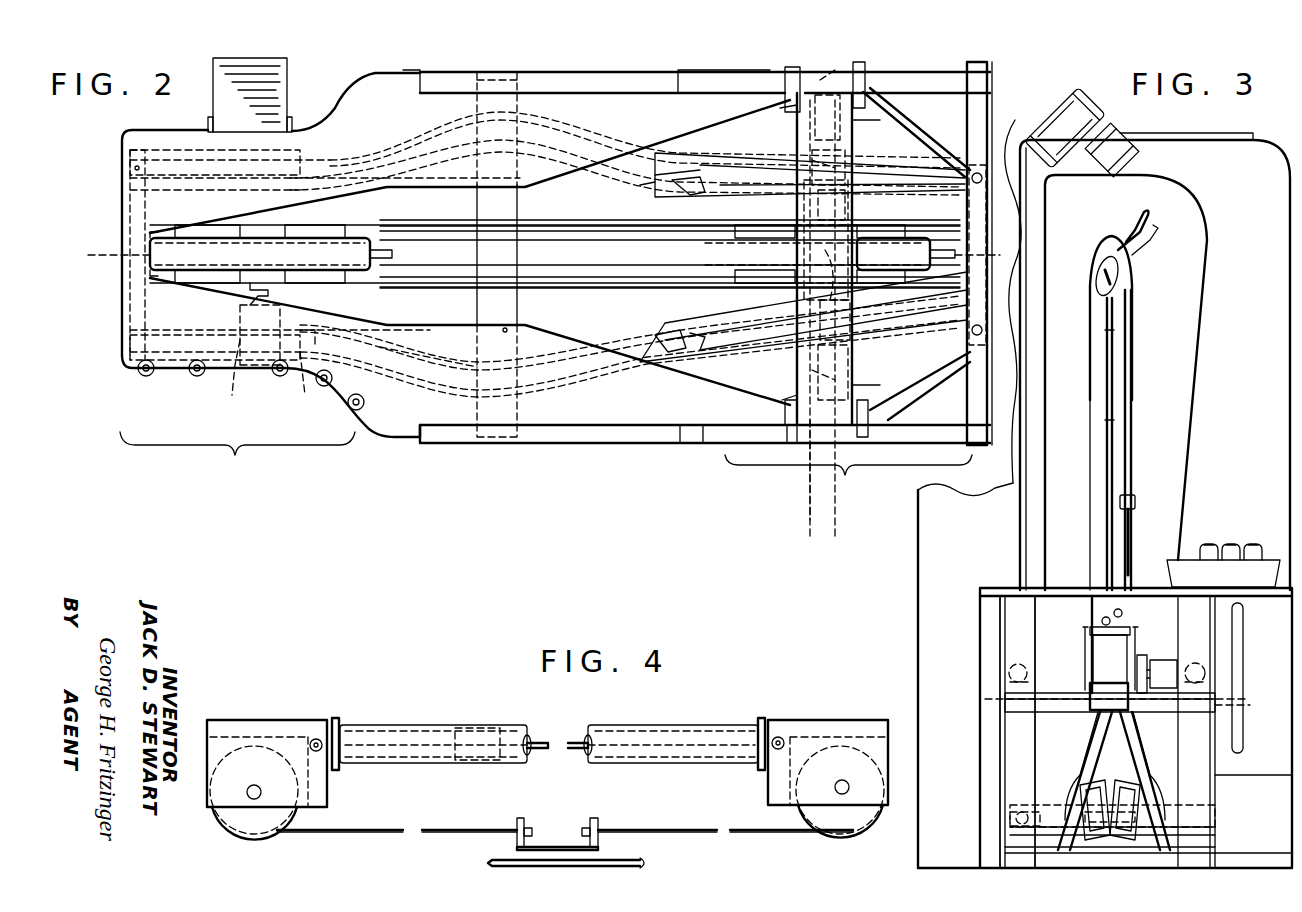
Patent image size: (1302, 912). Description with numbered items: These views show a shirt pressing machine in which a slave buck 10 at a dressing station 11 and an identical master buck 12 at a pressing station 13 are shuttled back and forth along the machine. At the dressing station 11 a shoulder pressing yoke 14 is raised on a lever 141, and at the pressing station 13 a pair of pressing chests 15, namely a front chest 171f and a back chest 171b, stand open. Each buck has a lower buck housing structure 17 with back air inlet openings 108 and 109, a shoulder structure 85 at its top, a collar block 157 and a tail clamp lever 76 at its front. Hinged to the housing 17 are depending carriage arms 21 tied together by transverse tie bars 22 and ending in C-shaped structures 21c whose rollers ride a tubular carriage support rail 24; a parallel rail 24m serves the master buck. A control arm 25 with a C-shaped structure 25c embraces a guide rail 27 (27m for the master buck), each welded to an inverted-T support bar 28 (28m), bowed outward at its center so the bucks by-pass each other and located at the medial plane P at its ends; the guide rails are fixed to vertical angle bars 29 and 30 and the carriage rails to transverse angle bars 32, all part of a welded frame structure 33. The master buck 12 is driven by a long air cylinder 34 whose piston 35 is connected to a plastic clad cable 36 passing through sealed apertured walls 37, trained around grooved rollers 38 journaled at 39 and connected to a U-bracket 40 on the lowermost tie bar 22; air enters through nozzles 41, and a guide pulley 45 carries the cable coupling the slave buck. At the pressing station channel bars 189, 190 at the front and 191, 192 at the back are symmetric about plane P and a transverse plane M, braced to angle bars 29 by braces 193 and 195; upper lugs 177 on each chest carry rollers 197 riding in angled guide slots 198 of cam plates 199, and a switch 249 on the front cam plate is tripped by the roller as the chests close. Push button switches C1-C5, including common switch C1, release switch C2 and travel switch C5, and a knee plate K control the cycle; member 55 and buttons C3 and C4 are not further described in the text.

In FIG. 2, the first buck 10 is at (358, 240).
In FIG. 3, the first buck 10 is at (1135, 420).
In FIG. 2, the dressing station 11 is at (237, 453).
In FIG. 2, the second buck 12 is at (725, 282).
In FIG. 2, the pressing station 13 is at (836, 500).
In FIG. 3, the shoulder pressing yoke 14 is at (1138, 158).
In FIG. 2, the pressing chests 15 is at (672, 195).
In FIG. 3, the lower buck housing structure 17 is at (1090, 603).
In FIG. 3, the carriage arms 21 is at (1135, 727).
In FIG. 3, the C-shaped structures 21c is at (1080, 783).
In FIG. 4, the transverse tie bars 22 is at (578, 869).
In FIG. 2, the carriage support rail 24 is at (405, 290).
In FIG. 3, the carriage support rail 24 is at (1140, 815).
In FIG. 2, the carriage support rail 24m is at (420, 230).
In FIG. 3, the carriage support rail 24m is at (1110, 817).
In FIG. 2, the control arm 25 is at (275, 292).
In FIG. 2, the C-shaped structure 25c is at (232, 395).
In FIG. 2, the guide rail 27 is at (312, 376).
In FIG. 3, the guide rail 27 is at (1212, 663).
In FIG. 2, the guide rail 27m is at (583, 125).
In FIG. 3, the guide rail 27m is at (1035, 655).
In FIG. 2, the support bar 28 is at (592, 370).
In FIG. 3, the support bar 28 is at (1248, 698).
In FIG. 2, the belt member 28m is at (625, 172).
In FIG. 3, the belt member 28m is at (985, 698).
In FIG. 2, the vertical angle bars 29 is at (1004, 140).
In FIG. 2, the vertical angle bars 30 is at (130, 190).
In FIG. 3, the vertical angle bars 30 is at (1010, 742).
In FIG. 3, the transverse angle bars 32 is at (1170, 790).
In FIG. 3, the frame structure 33 is at (975, 650).
In FIG. 3, the air cylinder 34 is at (1010, 828).
In FIG. 4, the air cylinder 34 is at (512, 725).
In FIG. 4, the piston 35 is at (470, 765).
In FIG. 4, the plastic clad cable 36 is at (580, 740).
In FIG. 4, the apertured wall 37 is at (340, 728).
In FIG. 4, the grooved roller 38 is at (242, 830).
In FIG. 4, the journal 39 is at (250, 793).
In FIG. 4, the U-bracket 40 is at (564, 802).
In FIG. 4, the nozzles 41 is at (322, 742).
In FIG. 3, the guide pulley 45 is at (1215, 850).
In FIG. 3, the rod 55 is at (1105, 412).
In FIG. 3, the tail clamp lever 76 is at (1142, 512).
In FIG. 3, the shoulder structure 85 is at (1098, 235).
In FIG. 3, the air inlet opening 108 is at (1090, 655).
In FIG. 3, the air inlet opening 109 is at (1122, 613).
In FIG. 3, the lever 141 is at (1078, 78).
In FIG. 3, the collar block 157 is at (1138, 278).
In FIG. 2, the pressing chest 171b is at (762, 150).
In FIG. 2, the pressing chest 171f is at (706, 372).
In FIG. 2, the upper pair of lugs 177 is at (810, 137).
In FIG. 2, the vertical channel bar 189 is at (790, 430).
In FIG. 2, the vertical channel bar 190 is at (862, 437).
In FIG. 2, the vertical channel bar 191 is at (790, 70).
In FIG. 2, the vertical channel bar 192 is at (874, 60).
In FIG. 2, the upper brace 193 is at (915, 405).
In FIG. 2, the upper brace 195 is at (935, 135).
In FIG. 2, the rollers 197 is at (836, 253).
In FIG. 2, the guide slots 198 is at (880, 128).
In FIG. 2, the cam plates 199 is at (778, 105).
In FIG. 2, the switch 249 is at (793, 477).
In FIG. 2, the common push button switch C1 is at (138, 368).
In FIG. 2, the release push button switch C2 is at (206, 368).
In FIG. 2, the container C3 is at (272, 382).
In FIG. 2, the container C4 is at (336, 383).
In FIG. 2, the travel push button switch C5 is at (365, 400).
In FIG. 3, the push button switches C1-C5 is at (1275, 540).
In FIG. 3, the knee plate K is at (1245, 680).
In FIG. 2, the transverse plane M is at (824, 291).
In FIG. 2, the longitudinal medial plane P is at (543, 254).